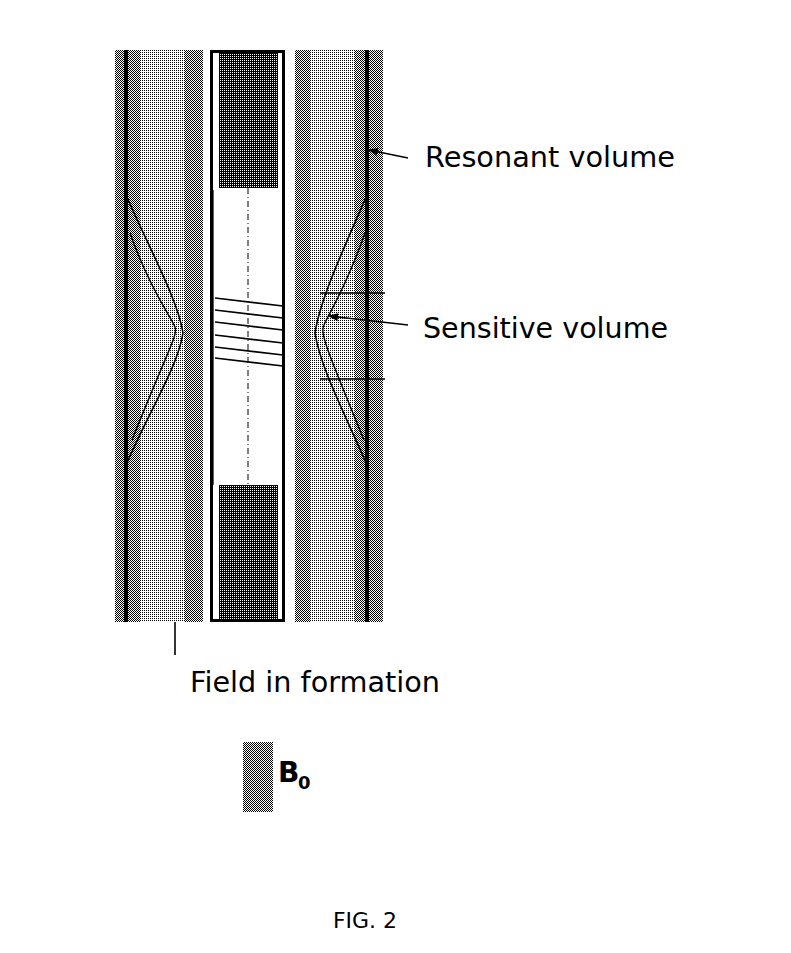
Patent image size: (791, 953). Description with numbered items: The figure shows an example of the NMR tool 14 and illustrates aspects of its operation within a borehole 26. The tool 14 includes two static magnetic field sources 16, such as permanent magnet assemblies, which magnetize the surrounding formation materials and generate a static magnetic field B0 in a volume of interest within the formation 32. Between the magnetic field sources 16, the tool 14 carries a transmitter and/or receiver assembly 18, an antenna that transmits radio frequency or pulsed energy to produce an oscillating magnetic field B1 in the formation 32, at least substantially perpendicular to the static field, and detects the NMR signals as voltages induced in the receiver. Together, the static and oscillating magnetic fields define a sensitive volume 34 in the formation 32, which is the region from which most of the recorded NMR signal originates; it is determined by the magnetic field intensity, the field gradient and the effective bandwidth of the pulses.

The tool 14 is at (287, 583).
The static magnetic field source 16 is at (276, 82).
The transmitter and/or receiver assembly 18 is at (245, 307).
The borehole 26 is at (208, 424).
The formation 32 is at (127, 326).
The sensitive volume 34 is at (148, 310).